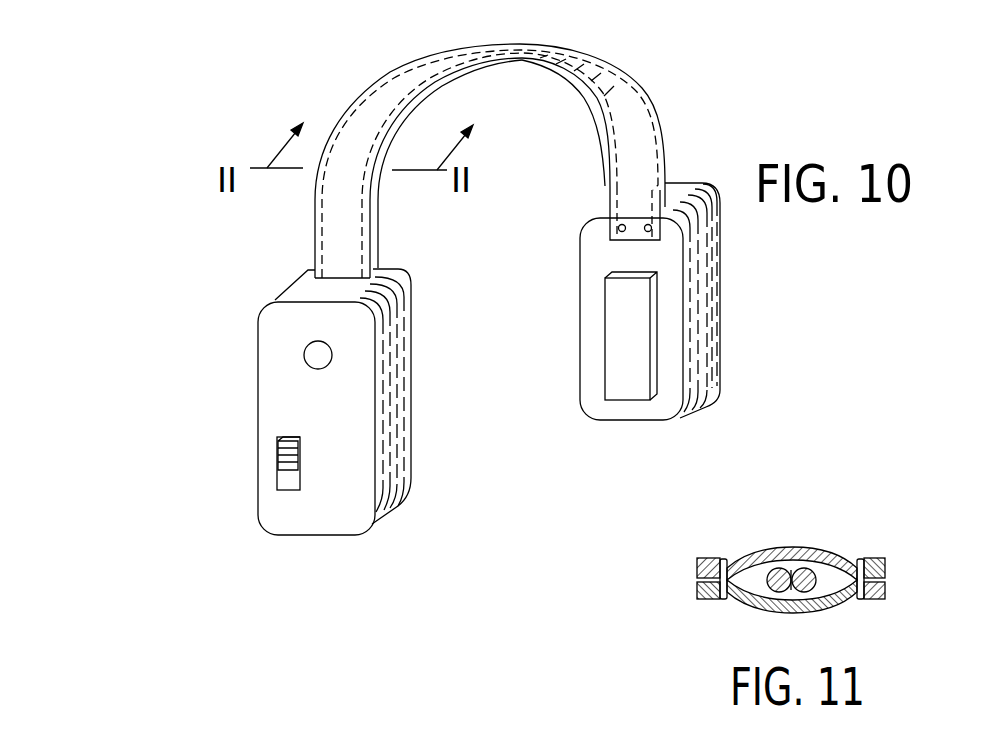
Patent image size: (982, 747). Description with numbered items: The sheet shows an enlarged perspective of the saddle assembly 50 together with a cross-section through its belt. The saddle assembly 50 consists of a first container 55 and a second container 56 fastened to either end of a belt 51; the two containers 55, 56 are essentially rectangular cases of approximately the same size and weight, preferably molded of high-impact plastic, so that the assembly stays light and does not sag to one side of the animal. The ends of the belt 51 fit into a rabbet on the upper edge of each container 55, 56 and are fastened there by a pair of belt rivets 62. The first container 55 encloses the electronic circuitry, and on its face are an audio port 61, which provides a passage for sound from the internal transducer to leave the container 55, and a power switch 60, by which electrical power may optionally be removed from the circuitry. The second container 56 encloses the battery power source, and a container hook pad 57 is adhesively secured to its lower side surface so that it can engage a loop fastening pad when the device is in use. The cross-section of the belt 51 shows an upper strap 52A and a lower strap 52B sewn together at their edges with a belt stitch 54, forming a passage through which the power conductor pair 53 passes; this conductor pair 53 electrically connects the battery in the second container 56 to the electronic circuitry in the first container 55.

In FIG. 10, the saddle assembly 50 is at (498, 268).
In FIG. 10, the belt 51 is at (448, 161).
In FIG. 11, the upper strap 52A is at (740, 539).
In FIG. 11, the lower strap 52B is at (750, 612).
In FIG. 11, the power conductor pair 53 is at (836, 606).
In FIG. 10, the belt stitch 54 is at (550, 164).
In FIG. 11, the belt stitch 54 is at (732, 543).
In FIG. 10, the first container 55 is at (271, 392).
In FIG. 10, the second container 56 is at (580, 301).
In FIG. 10, the container hook pad 57 is at (558, 336).
In FIG. 10, the power switch 60 is at (216, 484).
In FIG. 10, the audio port 61 is at (263, 373).
In FIG. 10, the belt rivets 62 is at (586, 185).